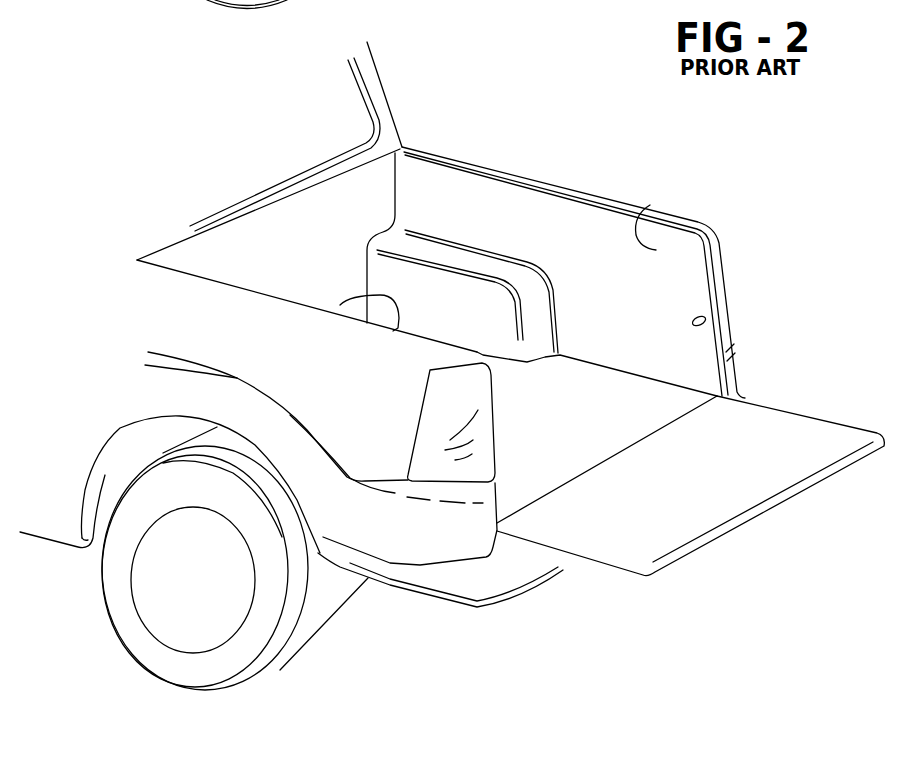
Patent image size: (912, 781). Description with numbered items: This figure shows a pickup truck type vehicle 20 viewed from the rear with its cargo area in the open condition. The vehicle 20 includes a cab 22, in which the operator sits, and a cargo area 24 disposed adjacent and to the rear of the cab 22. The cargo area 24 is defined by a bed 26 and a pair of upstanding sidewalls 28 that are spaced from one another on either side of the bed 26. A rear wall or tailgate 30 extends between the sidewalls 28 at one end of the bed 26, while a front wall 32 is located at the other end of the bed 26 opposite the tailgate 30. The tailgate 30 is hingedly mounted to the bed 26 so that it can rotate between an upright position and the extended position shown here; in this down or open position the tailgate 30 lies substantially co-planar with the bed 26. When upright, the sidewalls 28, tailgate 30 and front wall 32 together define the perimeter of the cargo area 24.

The vehicle 20 is at (455, 127).
The cab 22 is at (383, 98).
The cargo area 24 is at (513, 232).
The bed 26 is at (591, 417).
The sidewalls 28 is at (340, 305).
The tailgate 30 is at (782, 447).
The front wall 32 is at (300, 243).